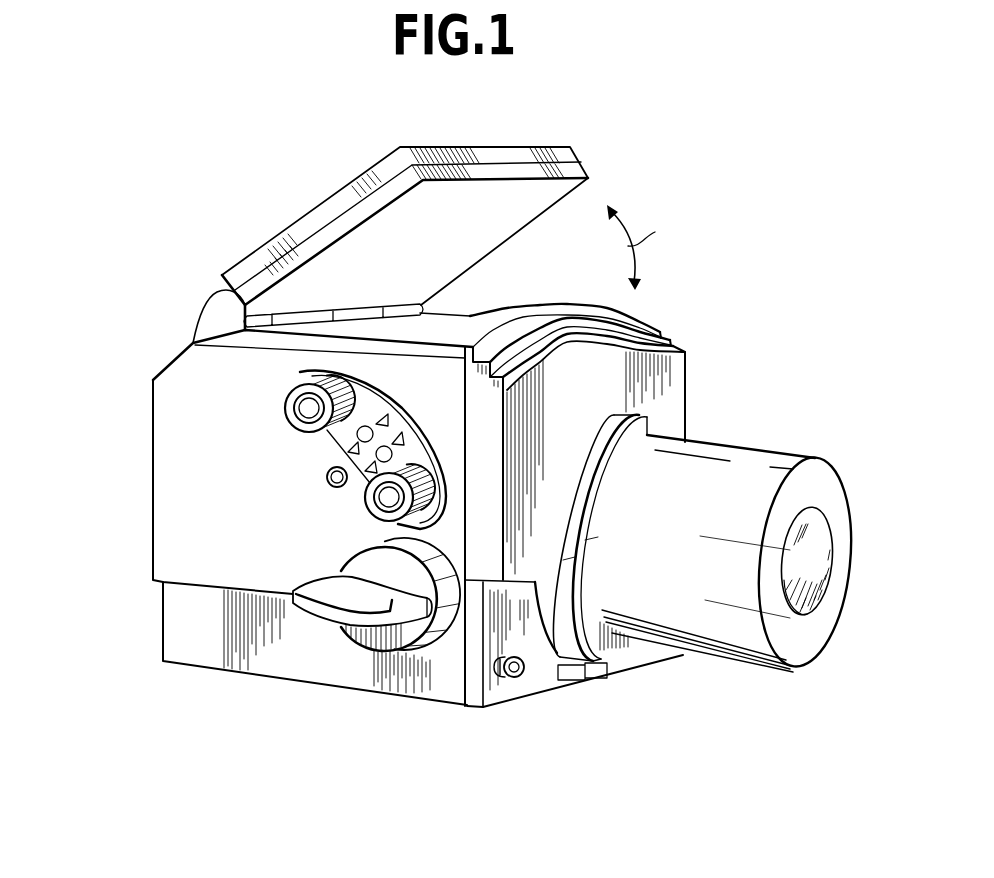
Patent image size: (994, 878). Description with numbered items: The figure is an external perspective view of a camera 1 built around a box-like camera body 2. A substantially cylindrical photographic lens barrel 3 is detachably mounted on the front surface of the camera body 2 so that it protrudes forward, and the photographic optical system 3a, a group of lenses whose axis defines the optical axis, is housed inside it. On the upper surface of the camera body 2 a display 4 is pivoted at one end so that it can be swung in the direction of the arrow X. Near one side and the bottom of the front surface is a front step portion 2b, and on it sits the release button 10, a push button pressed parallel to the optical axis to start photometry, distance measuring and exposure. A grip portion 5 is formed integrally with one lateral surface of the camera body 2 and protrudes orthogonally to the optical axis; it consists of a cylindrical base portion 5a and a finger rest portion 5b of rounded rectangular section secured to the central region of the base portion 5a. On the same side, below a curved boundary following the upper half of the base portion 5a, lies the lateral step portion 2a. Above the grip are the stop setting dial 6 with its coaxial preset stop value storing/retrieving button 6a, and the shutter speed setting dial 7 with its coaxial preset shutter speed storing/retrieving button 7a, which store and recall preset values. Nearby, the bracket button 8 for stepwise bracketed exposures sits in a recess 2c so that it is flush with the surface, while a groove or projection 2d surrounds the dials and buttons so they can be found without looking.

The camera 1 is at (125, 294).
The camera body 2 is at (167, 443).
The lateral step portion 2a is at (233, 597).
The front step portion 2b is at (547, 676).
The recess 2c is at (360, 476).
The groove or projection 2d is at (395, 406).
The photographic lens barrel 3 is at (757, 457).
The photographic optical system 3a is at (803, 614).
The display 4 is at (511, 153).
The grip portion 5 is at (307, 744).
The base portion 5a is at (385, 647).
The finger rest portion 5b is at (318, 625).
The stop setting dial 6 is at (322, 372).
The preset stop value storing/retrieving button 6a is at (313, 404).
The shutter speed setting dial 7 is at (432, 517).
The preset shutter speed storing/retrieving button 7a is at (378, 500).
The bracket button 8 is at (336, 477).
The release button 10 is at (524, 676).